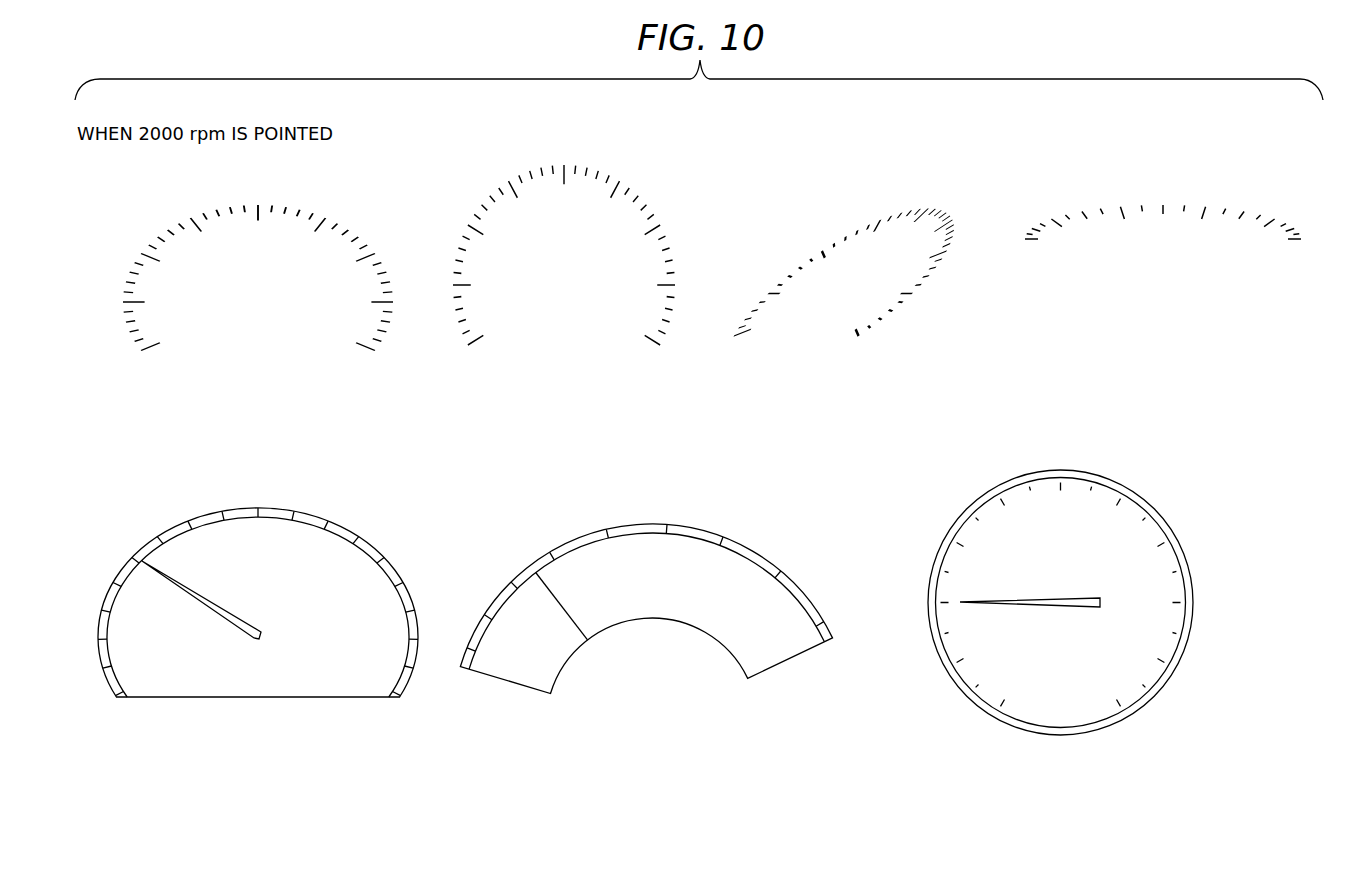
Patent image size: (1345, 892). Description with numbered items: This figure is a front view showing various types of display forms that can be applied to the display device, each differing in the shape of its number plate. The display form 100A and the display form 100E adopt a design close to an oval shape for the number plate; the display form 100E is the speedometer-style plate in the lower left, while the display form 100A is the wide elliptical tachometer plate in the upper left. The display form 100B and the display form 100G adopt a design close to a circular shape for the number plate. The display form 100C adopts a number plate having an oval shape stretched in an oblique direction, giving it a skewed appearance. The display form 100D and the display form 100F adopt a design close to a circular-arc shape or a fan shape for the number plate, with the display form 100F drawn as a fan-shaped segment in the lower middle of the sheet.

The display form 100A is at (344, 230).
The display form 100B is at (582, 167).
The display form 100C is at (862, 225).
The display form 100D is at (1125, 205).
The display form 100E is at (283, 700).
The display form 100F is at (663, 622).
The display form 100G is at (1070, 737).